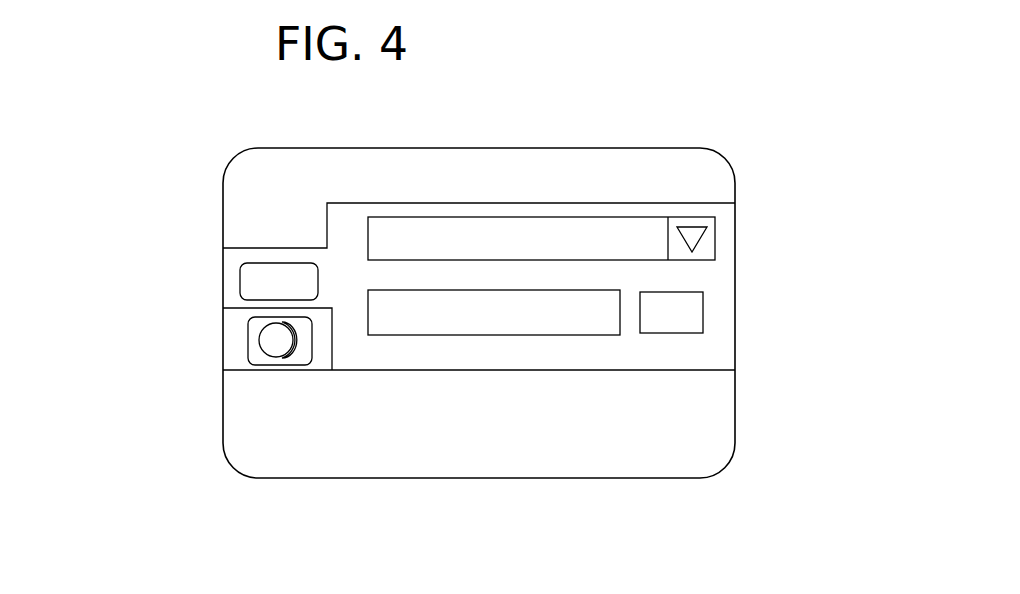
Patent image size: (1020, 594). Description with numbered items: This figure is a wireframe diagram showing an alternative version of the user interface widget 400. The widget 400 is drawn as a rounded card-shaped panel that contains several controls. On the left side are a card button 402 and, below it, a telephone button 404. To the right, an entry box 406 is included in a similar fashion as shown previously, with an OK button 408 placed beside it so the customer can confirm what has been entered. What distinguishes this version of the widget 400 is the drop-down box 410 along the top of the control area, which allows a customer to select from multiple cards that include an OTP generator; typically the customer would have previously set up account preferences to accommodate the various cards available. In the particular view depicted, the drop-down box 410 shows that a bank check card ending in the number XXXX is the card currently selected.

The widget 400 is at (627, 148).
The card button 402 is at (240, 280).
The telephone button 404 is at (248, 337).
The entry box 406 is at (447, 336).
The OK button 408 is at (703, 305).
The drop-down box 410 is at (712, 223).